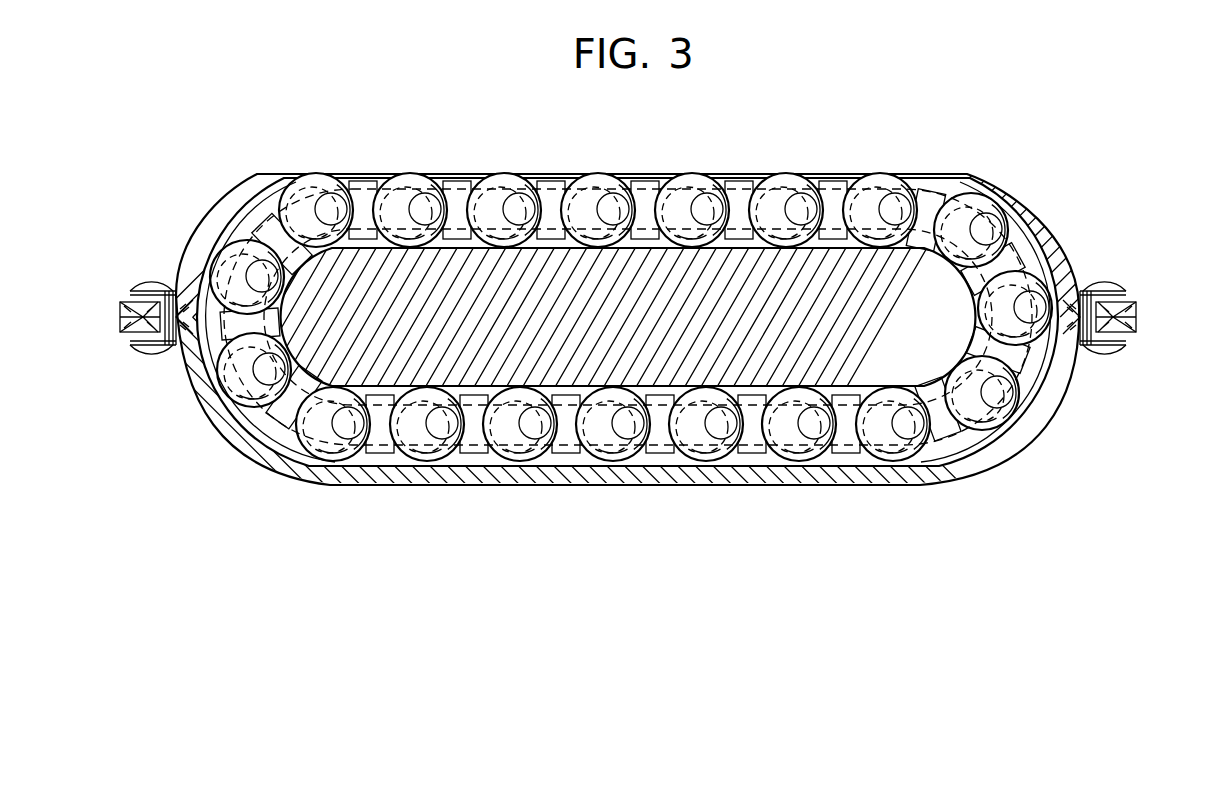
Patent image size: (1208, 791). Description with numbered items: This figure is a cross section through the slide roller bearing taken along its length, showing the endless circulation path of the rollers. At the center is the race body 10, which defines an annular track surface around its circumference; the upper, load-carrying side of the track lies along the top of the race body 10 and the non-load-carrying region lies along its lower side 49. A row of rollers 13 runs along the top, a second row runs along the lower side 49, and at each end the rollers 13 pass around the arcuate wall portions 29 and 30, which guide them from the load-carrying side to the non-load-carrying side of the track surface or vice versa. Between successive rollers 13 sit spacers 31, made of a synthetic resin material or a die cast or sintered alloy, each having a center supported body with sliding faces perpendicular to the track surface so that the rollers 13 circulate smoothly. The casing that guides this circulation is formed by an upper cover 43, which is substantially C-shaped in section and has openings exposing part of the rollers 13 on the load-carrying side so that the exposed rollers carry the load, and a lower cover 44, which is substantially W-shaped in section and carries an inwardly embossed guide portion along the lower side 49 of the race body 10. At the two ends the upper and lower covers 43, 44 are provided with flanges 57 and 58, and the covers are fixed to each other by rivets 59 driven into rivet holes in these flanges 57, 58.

The race body 10 is at (692, 310).
The roller 13 is at (410, 186).
The arcuate wall portion 29 is at (285, 350).
The arcuate wall portion 30 is at (962, 344).
The spacer 31 is at (551, 205).
The upper cover 43 is at (1040, 195).
The lower cover 44 is at (1043, 447).
The lower side 49 is at (659, 388).
The flange 57 is at (120, 311).
The flange 58 is at (1136, 311).
The rivet 59 is at (152, 290).